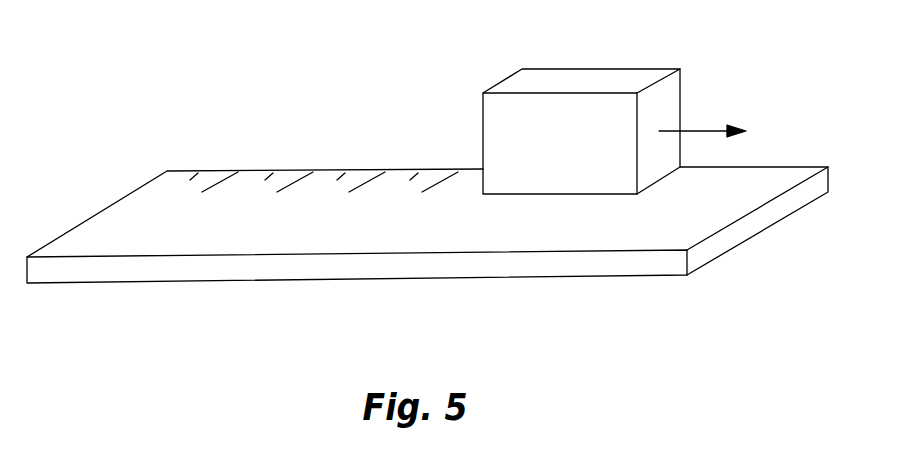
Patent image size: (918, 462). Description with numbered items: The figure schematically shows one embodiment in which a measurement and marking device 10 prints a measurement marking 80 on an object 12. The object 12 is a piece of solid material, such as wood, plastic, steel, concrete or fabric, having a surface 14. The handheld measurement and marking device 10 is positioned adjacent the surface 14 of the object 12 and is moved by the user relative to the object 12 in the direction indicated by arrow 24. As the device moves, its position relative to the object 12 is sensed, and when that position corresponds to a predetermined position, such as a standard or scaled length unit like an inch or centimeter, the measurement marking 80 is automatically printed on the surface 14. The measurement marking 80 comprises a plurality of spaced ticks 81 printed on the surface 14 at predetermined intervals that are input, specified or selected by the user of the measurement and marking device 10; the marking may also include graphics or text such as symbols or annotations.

The measurement and marking device 10 is at (580, 72).
The object 12 is at (217, 265).
The surface 14 is at (775, 177).
The arrow 24 is at (713, 129).
The measurement marking 80 is at (327, 138).
The spaced ticks 81 is at (270, 173).